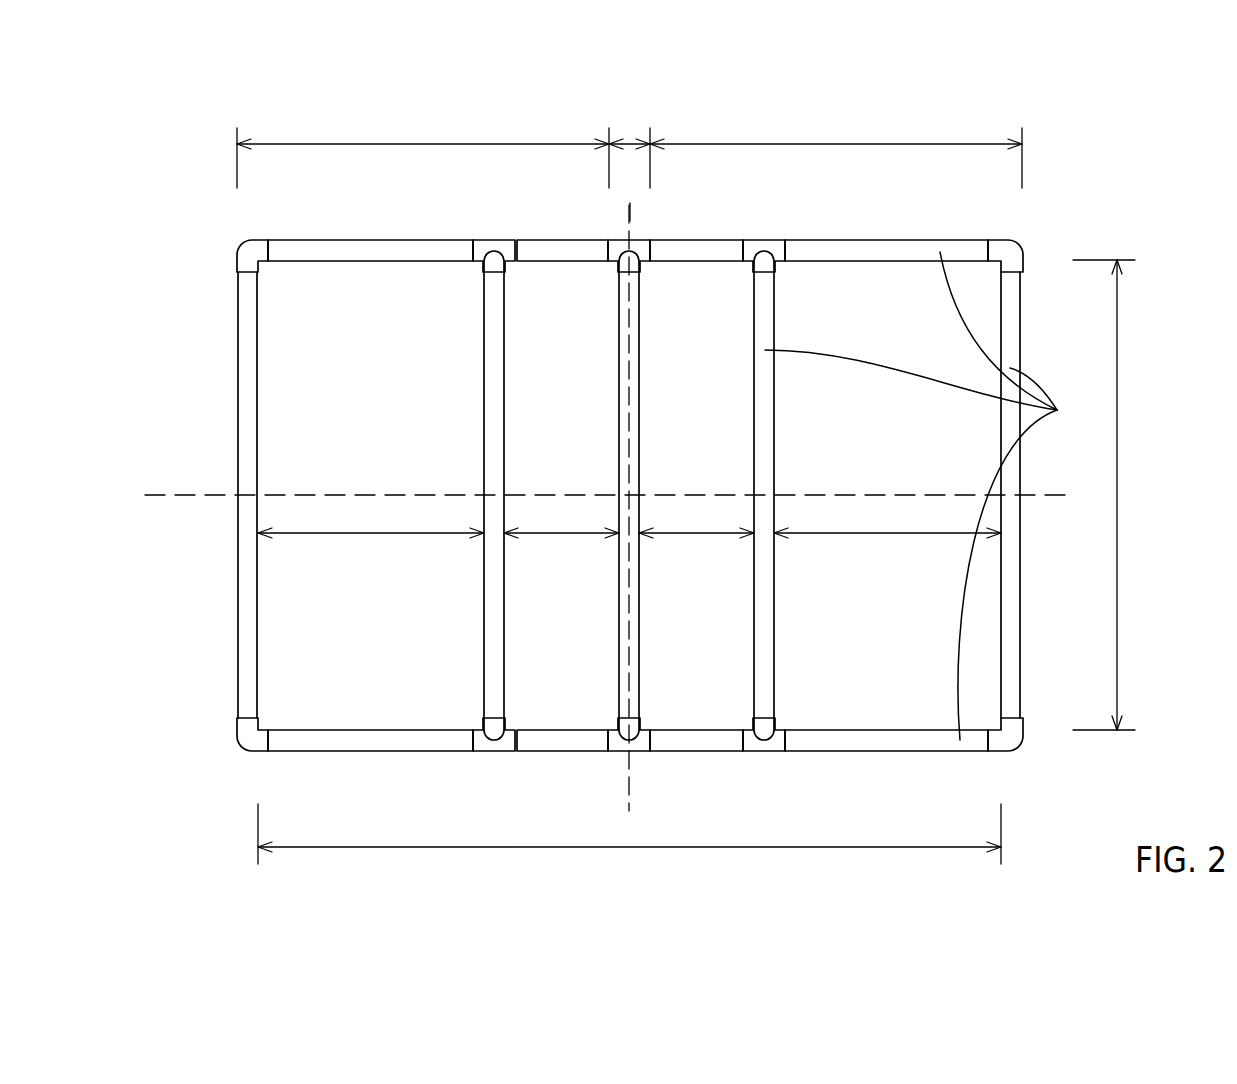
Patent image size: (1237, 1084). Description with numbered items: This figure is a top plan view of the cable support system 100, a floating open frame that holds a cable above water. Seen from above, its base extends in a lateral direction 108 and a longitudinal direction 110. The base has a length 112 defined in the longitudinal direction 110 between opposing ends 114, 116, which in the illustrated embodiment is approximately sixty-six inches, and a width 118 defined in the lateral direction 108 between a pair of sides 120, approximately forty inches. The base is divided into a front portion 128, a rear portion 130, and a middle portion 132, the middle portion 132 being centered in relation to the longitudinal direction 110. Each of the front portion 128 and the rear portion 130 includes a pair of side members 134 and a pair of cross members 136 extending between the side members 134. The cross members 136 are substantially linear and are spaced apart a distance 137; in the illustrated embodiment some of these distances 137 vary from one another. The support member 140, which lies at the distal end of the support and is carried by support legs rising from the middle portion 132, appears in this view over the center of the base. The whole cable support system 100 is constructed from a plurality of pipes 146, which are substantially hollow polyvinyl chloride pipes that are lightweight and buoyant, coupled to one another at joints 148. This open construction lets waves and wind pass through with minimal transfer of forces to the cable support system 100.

The cable support system 100 is at (1060, 213).
The lateral direction 108 is at (627, 214).
The longitudinal direction 110 is at (215, 495).
The length 112 is at (790, 847).
The end 114 is at (238, 657).
The end 116 is at (1012, 675).
The width 118 is at (1125, 375).
The sides 120 is at (853, 240).
The front portion 128 is at (412, 144).
The rear portion 130 is at (795, 144).
The middle portion 132 is at (630, 144).
The side members 134 is at (373, 240).
The cross members 136 is at (237, 352).
The distance 137 is at (372, 535).
The support member 140 is at (620, 594).
The pipes 146 is at (934, 496).
The joints 148 is at (238, 244).